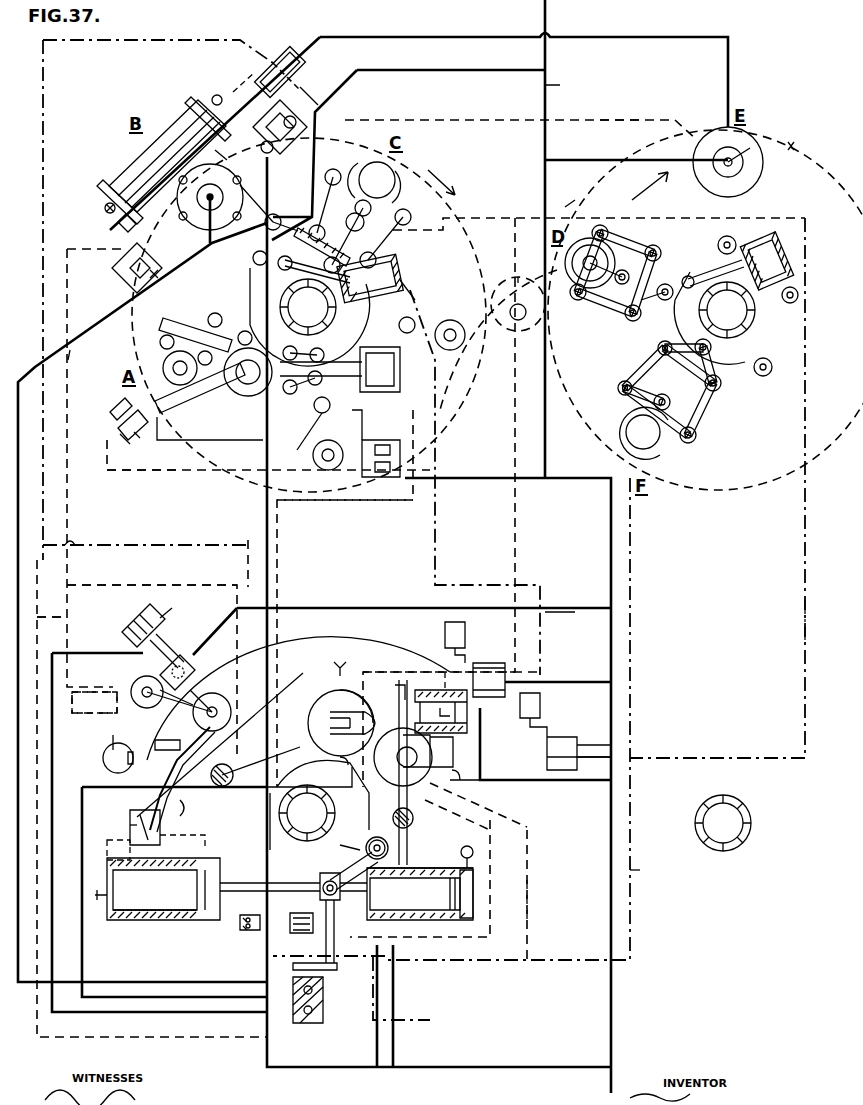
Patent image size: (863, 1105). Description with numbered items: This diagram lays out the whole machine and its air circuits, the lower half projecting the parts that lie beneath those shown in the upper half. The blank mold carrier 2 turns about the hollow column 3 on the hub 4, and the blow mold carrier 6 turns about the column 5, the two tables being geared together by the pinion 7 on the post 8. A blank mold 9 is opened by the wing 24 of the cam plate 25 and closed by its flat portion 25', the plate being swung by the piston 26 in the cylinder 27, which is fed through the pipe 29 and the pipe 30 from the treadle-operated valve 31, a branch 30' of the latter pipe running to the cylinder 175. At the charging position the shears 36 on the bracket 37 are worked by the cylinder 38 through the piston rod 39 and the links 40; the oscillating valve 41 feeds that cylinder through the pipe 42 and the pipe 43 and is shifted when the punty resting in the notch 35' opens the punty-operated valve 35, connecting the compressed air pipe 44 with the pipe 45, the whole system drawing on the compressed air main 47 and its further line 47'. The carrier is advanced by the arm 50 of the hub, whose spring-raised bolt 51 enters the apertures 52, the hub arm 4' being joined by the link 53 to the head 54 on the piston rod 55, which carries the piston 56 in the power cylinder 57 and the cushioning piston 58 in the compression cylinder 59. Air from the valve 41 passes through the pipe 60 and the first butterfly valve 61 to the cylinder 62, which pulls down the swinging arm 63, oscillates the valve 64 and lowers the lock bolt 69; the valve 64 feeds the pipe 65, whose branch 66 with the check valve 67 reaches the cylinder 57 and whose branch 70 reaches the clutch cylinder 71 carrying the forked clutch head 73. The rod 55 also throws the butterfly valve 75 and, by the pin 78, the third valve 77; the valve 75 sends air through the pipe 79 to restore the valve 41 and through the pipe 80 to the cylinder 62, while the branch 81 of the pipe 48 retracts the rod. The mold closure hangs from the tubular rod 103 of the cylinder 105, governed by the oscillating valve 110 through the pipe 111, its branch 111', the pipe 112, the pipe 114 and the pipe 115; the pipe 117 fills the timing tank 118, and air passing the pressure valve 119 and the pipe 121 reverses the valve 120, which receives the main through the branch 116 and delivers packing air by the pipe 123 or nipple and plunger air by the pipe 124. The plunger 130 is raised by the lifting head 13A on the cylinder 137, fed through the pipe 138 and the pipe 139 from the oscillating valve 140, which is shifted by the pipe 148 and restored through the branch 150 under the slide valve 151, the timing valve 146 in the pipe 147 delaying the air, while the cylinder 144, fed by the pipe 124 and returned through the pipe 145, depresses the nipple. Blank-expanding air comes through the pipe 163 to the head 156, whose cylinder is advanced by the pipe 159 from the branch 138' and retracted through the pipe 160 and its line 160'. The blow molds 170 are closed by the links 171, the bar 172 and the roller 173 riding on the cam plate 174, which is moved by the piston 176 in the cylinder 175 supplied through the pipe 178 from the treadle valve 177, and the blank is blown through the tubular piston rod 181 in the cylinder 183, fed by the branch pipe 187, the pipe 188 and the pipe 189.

The feed mechanism 2 is at (455, 195).
The shaft 3 is at (307, 560).
The cam plate 4 is at (319, 805).
The cam plate lug 4' is at (346, 840).
The shaft 5 is at (725, 566).
The axis 6 is at (794, 137).
The boundary 7 is at (508, 295).
The pivot 8 is at (511, 310).
The pulley 9 is at (163, 368).
The lever 24 is at (282, 232).
The cam 25 is at (310, 317).
The cam rod 25' is at (301, 271).
The bar 26 is at (370, 278).
The link 27 is at (387, 258).
The lever 29 is at (543, 585).
The slide 30 is at (420, 371).
The slide 30' is at (568, 196).
The switch 31 is at (486, 660).
The bar 35 is at (114, 427).
The bar 35' is at (106, 408).
The arm 36 is at (178, 322).
The cam 37 is at (248, 396).
The block 38 is at (378, 358).
The roller 39 is at (326, 400).
The rod 40 is at (300, 395).
The valve 41 is at (372, 440).
The roller 42 is at (318, 431).
The pipe 43 is at (408, 402).
The bracket 44 is at (222, 440).
The boundary 45 is at (193, 472).
The shaft 47 is at (544, 582).
The shaft 47' is at (579, 782).
The frame 48 is at (350, 757).
The rod 50 is at (263, 758).
The pin 51 is at (225, 766).
The roller 52 is at (300, 445).
The lever 53 is at (343, 865).
The block 54 is at (320, 880).
The cylinder 55 is at (406, 894).
The piston 56 is at (475, 888).
The cylinder wall 57 is at (437, 868).
The solenoid 58 is at (196, 888).
The solenoid core 59 is at (185, 920).
The boundary 60 is at (395, 502).
The contact 61 is at (308, 934).
The disc 62 is at (413, 757).
The rod 63 is at (410, 832).
The switch 64 is at (441, 703).
The boundary 65 is at (423, 676).
The contact 66 is at (396, 690).
The pin 67 is at (473, 850).
The pin 69 is at (395, 813).
The boundary 70 is at (434, 664).
The cam 71 is at (333, 695).
The cam 73 is at (315, 724).
The contact 75 is at (250, 932).
The bar 77 is at (305, 941).
The switch 78 is at (327, 995).
The boundary 79 is at (245, 962).
The boundary 80 is at (530, 900).
The pivot 81 is at (380, 844).
The shaft 103 is at (206, 202).
The pulley 105 is at (210, 197).
The block 110 is at (280, 125).
The pin 111 is at (187, 195).
The pin 111' is at (240, 160).
The boundary 112 is at (216, 50).
The shaft 114 is at (262, 500).
The link 115 is at (306, 172).
The link 116 is at (294, 210).
The link 117 is at (322, 92).
The cylinder 118 is at (128, 160).
The pin 119 is at (105, 207).
The block 120 is at (128, 295).
The block 121 is at (117, 224).
The line 123 is at (104, 333).
The boundary 124 is at (70, 518).
The link 130 is at (200, 718).
The pulley 13A is at (216, 700).
The block 137 is at (191, 669).
The rod 138 is at (182, 779).
The line 138' is at (106, 950).
The boundary 139 is at (185, 845).
The switch 140 is at (130, 823).
The pulley 144 is at (137, 684).
The boundary 145 is at (94, 702).
The disc 146 is at (103, 758).
The contact 147 is at (113, 735).
The contact 148 is at (128, 838).
The boundary 150 is at (178, 588).
The rod 151 is at (224, 743).
The link 156 is at (198, 625).
The boundary 159 is at (106, 610).
The line 160 is at (97, 641).
The line 160' is at (159, 1025).
The cylinder 163 is at (190, 640).
The clamp 170 is at (662, 450).
The link 171 is at (640, 365).
The link 172 is at (690, 360).
The pivot 173 is at (711, 357).
The body 174 is at (724, 318).
The block 175 is at (780, 237).
The rod 176 is at (752, 235).
The switch 177 is at (568, 735).
The boundary 178 is at (798, 678).
The pulley 181 is at (745, 170).
The arm 183 is at (752, 146).
The line 187 is at (618, 155).
The line 188 is at (642, 40).
The line 189 is at (618, 115).